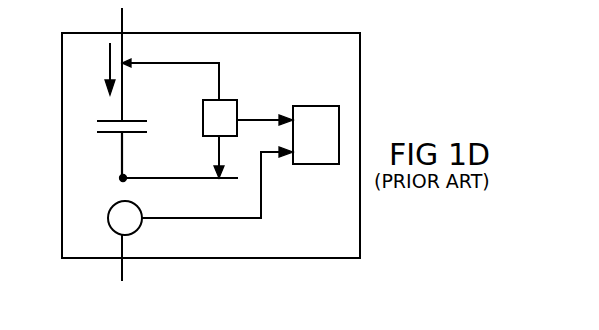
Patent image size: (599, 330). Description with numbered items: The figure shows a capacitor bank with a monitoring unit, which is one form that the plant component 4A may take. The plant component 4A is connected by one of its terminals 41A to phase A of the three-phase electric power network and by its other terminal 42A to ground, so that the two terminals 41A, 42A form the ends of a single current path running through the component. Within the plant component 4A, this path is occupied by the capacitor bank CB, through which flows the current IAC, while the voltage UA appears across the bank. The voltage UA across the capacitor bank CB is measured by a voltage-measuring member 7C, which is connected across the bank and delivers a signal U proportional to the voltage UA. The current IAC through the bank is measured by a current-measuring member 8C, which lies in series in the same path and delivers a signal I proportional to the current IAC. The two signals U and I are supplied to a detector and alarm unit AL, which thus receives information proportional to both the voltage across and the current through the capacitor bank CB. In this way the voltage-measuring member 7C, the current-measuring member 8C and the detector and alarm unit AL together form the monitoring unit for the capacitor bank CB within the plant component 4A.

The plant component 4A is at (361, 63).
The terminal 41A is at (121, 18).
The terminal 42A is at (122, 272).
The voltage-measuring member 7C is at (232, 100).
The current-measuring member 8C is at (137, 231).
The capacitor bank CB is at (133, 112).
The detector and alarm unit AL is at (320, 164).
The current through the capacitor bank IAC is at (93, 69).
The voltage across the capacitor bank UA is at (170, 70).
The voltage signal U is at (265, 110).
The current signal I is at (217, 176).